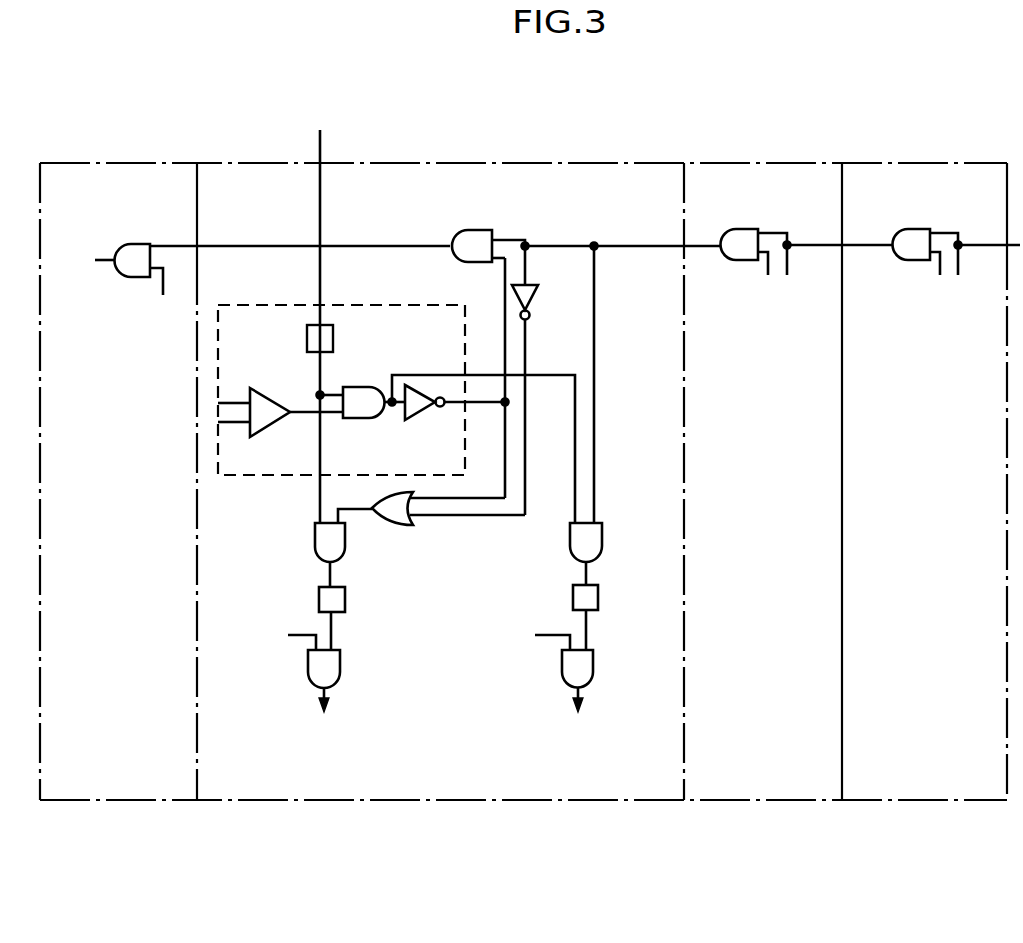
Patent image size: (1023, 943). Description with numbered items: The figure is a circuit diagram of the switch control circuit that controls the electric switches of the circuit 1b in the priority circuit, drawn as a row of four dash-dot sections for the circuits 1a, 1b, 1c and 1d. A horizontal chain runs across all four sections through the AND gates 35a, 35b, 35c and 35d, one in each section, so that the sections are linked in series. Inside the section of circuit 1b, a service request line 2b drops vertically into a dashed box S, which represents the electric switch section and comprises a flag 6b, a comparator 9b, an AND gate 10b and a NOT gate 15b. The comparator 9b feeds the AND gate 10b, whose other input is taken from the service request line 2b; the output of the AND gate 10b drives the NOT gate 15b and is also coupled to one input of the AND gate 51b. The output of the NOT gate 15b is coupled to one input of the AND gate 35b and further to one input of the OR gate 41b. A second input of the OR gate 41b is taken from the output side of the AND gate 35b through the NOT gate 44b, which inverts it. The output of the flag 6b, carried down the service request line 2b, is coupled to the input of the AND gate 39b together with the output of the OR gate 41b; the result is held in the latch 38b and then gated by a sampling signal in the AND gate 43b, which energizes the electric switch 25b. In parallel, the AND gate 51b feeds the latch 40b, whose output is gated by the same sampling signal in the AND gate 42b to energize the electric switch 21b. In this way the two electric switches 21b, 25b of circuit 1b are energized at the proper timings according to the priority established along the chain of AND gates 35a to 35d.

The circuit 1a is at (138, 800).
The circuit 1b is at (447, 800).
The circuit 1c is at (767, 800).
The circuit 1d is at (925, 800).
The service request line 2b is at (318, 150).
The electric switch section S is at (335, 304).
The flag 6b is at (333, 338).
The comparator 9b is at (262, 388).
The AND gate 10b is at (362, 418).
The NOT gate 15b is at (420, 420).
The AND gate 35a is at (133, 244).
The AND gate 35b is at (470, 230).
The AND gate 35c is at (738, 229).
The AND gate 35d is at (910, 229).
The NOT gate 44b is at (532, 302).
The OR gate 41b is at (395, 525).
The AND gate 39b is at (345, 555).
The latch 38b is at (345, 603).
The AND gate 43b is at (340, 668).
The AND gate 51b is at (602, 545).
The latch 40b is at (598, 598).
The AND gate 42b is at (593, 668).
The electric switch 25b is at (351, 724).
The electric switch 21b is at (591, 724).